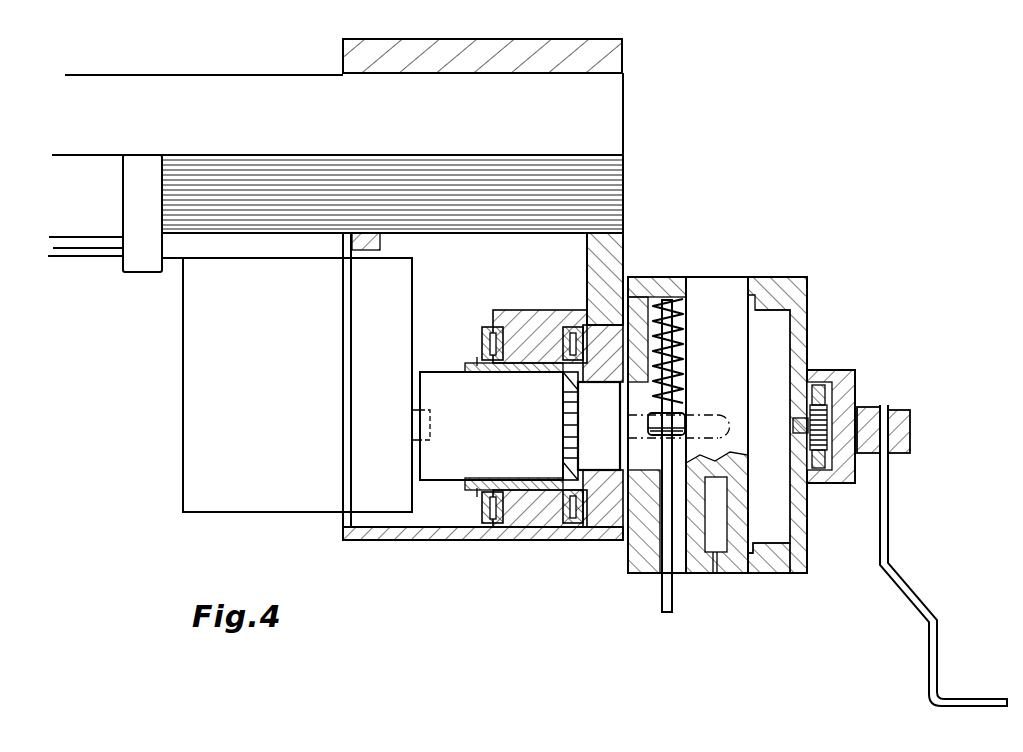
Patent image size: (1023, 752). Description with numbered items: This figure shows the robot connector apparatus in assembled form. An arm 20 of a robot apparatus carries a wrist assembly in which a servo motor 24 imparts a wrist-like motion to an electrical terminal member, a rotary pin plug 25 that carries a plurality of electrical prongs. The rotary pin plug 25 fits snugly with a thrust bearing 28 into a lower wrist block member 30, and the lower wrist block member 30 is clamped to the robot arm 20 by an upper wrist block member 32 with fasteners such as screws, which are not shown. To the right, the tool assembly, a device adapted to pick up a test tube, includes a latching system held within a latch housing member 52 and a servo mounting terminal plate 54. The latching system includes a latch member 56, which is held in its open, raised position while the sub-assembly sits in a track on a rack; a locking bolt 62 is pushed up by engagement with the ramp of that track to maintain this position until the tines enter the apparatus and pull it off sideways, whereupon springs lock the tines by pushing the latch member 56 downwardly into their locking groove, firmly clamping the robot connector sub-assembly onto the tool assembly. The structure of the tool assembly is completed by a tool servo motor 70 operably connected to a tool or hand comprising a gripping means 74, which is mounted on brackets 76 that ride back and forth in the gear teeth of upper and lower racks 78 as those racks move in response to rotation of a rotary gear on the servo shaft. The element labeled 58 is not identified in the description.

The arm 20 is at (233, 107).
The servo motor 24 is at (262, 410).
The rotary pin plug 25 is at (445, 400).
The thrust bearing 28 is at (480, 338).
The lower wrist block member 30 is at (437, 540).
The upper wrist block member 32 is at (623, 50).
The latch housing member 52 is at (647, 277).
The servo mounting terminal plate 54 is at (721, 402).
The latch member 56 is at (680, 382).
The compression spring 58 is at (683, 302).
The locking bolt 62 is at (673, 596).
The tool servo motor 70 is at (780, 402).
The gripping means 74 is at (933, 680).
The brackets 76 is at (870, 410).
The upper and lower racks 78 is at (815, 385).